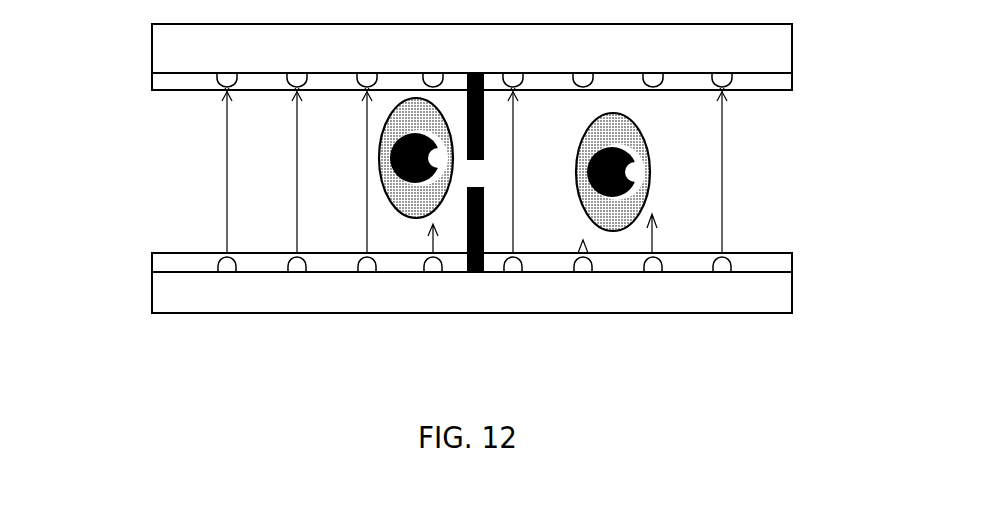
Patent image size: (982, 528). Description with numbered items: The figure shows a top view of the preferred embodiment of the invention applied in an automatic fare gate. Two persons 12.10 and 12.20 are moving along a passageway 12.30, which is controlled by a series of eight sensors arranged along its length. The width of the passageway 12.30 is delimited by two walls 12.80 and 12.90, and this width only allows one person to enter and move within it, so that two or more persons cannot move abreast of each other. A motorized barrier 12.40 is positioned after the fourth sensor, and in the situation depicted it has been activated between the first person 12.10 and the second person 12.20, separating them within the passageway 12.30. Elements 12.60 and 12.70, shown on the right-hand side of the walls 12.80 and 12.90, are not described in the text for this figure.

The person 12.10 is at (404, 201).
The person 12.20 is at (625, 227).
The passageway 12.30 is at (160, 172).
The motorized barrier 12.40 is at (488, 141).
The upper electrode 12.60 is at (734, 89).
The lower electrode 12.70 is at (736, 254).
The wall 12.80 is at (190, 65).
The wall 12.90 is at (188, 284).